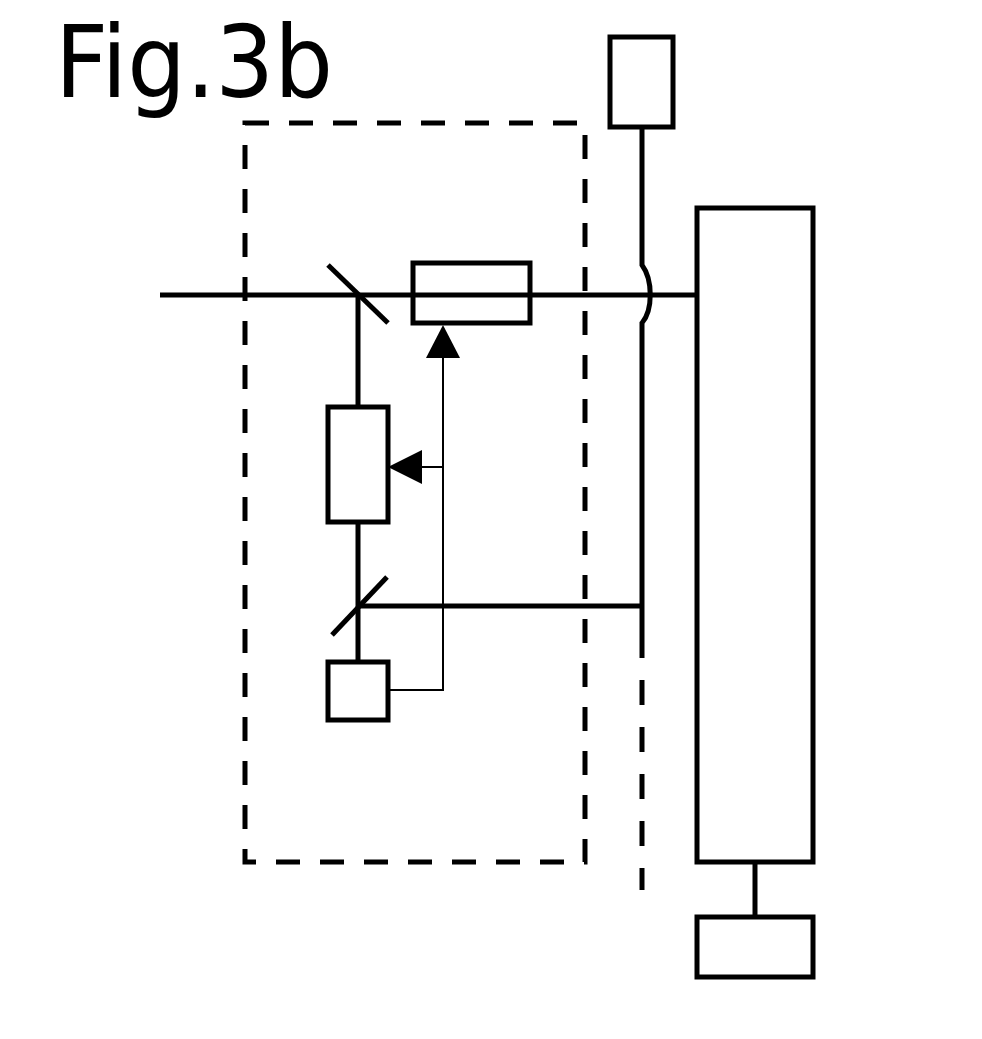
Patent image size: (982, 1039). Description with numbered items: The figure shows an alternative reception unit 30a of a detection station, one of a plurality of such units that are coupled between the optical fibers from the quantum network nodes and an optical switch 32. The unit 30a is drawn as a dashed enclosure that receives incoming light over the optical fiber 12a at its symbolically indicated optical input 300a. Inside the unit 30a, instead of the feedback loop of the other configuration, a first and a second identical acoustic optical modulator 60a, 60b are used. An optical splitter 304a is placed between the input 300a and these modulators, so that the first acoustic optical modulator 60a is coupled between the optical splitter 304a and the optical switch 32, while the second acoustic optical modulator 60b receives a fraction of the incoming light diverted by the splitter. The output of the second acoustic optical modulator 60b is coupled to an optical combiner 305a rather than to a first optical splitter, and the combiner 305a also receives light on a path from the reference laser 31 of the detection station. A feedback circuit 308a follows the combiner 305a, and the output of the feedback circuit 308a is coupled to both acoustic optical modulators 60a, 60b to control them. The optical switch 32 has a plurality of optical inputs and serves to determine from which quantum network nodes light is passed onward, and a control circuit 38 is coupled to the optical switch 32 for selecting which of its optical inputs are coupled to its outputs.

The unit 30a is at (390, 862).
The optical fiber 12a is at (203, 297).
The optical input 300a is at (245, 290).
The optical splitter 304a is at (338, 262).
The first acoustic optical modulator 60a is at (470, 263).
The second acoustic optical modulator 60b is at (328, 470).
The optical combiner 305a is at (330, 633).
The feedback circuit 308a is at (357, 722).
The reference laser 31 is at (673, 67).
The optical switch 32 is at (755, 208).
The control circuit 38 is at (697, 950).